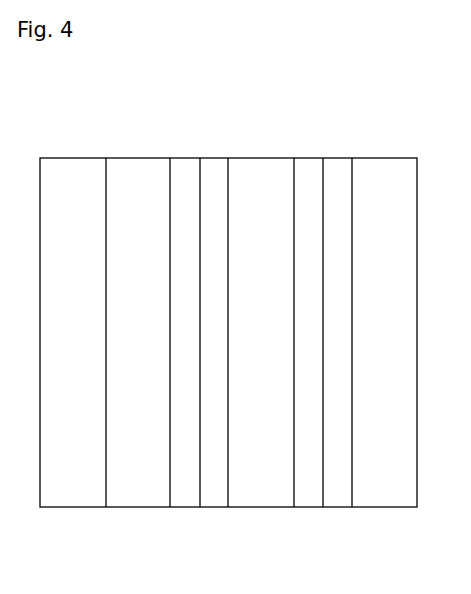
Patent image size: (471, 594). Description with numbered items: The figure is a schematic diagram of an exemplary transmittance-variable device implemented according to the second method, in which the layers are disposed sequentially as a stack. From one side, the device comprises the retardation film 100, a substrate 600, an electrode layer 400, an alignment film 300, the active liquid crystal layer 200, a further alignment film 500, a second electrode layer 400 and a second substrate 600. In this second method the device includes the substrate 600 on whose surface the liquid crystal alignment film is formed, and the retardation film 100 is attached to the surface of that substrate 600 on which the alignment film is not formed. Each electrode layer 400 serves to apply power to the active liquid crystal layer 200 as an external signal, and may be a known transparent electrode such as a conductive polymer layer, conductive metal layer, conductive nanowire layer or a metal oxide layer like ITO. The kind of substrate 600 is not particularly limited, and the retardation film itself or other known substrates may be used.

The retardation film 100 is at (78, 166).
The active liquid crystal layer 200 is at (261, 166).
The alignment film 300 is at (217, 502).
The electrode layer 400 is at (191, 166).
The alignment film 500 is at (312, 502).
The substrate 600 is at (140, 502).